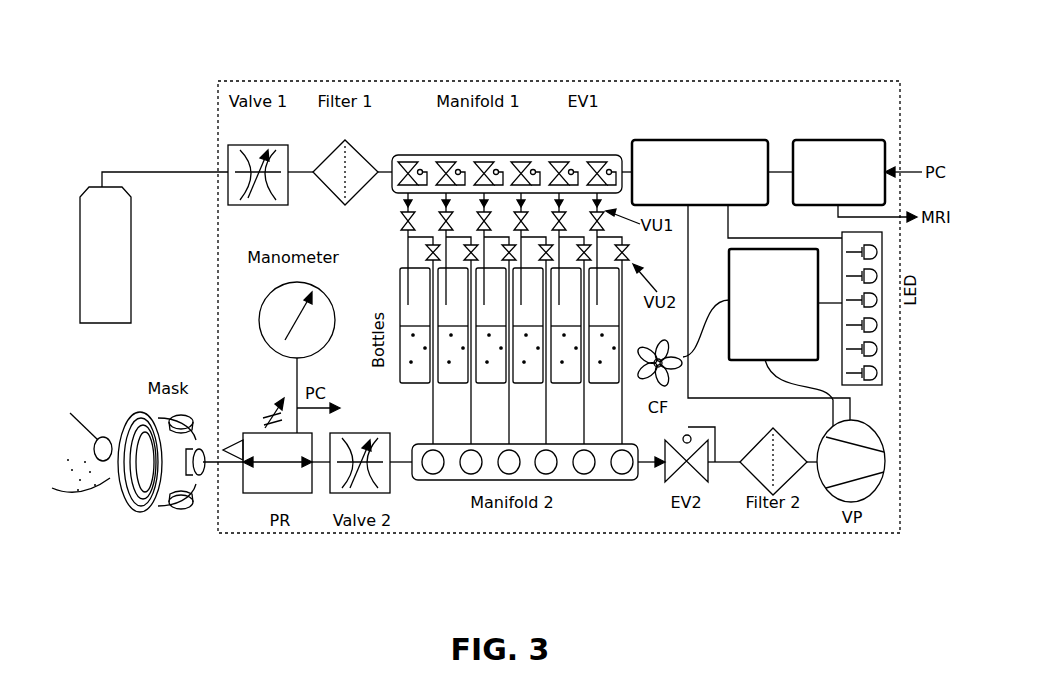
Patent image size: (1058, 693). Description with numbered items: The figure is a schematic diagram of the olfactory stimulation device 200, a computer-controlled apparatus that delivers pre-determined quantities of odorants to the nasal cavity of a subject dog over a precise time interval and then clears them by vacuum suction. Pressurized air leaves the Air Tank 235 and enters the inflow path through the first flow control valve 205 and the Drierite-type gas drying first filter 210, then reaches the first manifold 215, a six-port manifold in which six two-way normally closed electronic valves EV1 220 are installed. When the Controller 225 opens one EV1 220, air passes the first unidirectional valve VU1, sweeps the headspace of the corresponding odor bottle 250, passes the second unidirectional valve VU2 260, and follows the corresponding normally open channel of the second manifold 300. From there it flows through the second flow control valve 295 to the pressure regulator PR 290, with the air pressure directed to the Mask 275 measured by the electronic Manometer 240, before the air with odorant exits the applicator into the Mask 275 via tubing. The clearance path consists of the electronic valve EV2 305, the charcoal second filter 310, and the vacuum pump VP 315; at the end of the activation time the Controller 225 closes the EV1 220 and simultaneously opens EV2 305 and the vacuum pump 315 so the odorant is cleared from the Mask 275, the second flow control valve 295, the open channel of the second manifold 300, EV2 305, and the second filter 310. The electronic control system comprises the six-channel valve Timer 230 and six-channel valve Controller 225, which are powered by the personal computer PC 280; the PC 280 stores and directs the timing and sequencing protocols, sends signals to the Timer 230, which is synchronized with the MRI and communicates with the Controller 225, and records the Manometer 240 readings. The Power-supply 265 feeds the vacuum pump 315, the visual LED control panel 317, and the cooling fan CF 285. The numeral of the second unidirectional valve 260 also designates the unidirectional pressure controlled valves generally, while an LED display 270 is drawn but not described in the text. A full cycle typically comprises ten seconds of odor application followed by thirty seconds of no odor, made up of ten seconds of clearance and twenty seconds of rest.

The olfactory stimulation device 200 is at (782, 59).
The flow control Valve 1 205 is at (256, 80).
The Filter 1 210 is at (354, 80).
The Manifold 1 215 is at (462, 80).
The electronic valve EV1 220 is at (414, 150).
The Controller 225 is at (705, 140).
The Timer 230 is at (841, 140).
The Air Tank 235 is at (131, 268).
The Manometer 240 is at (312, 249).
The odor bottles 250 is at (386, 292).
The unidirectional valve VU2 260 is at (680, 283).
The Power-supply 265 is at (741, 360).
The LED display 270 is at (948, 230).
The Mask 275 is at (140, 512).
The personal computer 280 is at (934, 163).
The cooling fan 285 is at (690, 412).
The pressure regulator 290 is at (281, 530).
The flow control Valve 2 295 is at (361, 530).
The Manifold 2 300 is at (518, 512).
The electronic valve EV2 305 is at (690, 515).
The Filter 2 310 is at (775, 515).
The vacuum pump 315 is at (855, 527).
The visual LED control panel 317 is at (882, 345).